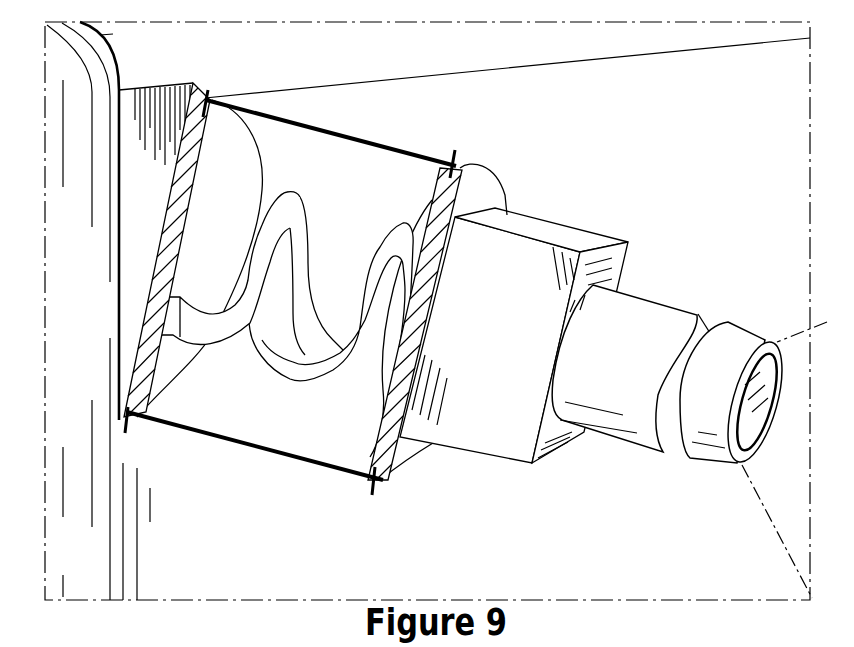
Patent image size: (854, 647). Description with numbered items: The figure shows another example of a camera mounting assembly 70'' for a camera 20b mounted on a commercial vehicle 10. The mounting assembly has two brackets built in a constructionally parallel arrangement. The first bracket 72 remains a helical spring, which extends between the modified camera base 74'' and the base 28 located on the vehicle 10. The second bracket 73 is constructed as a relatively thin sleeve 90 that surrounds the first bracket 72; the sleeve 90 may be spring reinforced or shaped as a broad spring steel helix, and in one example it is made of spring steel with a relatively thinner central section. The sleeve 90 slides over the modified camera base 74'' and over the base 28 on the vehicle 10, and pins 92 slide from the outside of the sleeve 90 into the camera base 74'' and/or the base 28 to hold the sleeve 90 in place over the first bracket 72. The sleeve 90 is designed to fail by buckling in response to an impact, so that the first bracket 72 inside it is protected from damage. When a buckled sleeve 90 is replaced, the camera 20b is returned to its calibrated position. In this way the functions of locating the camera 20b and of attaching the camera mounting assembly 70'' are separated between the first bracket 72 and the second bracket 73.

The commercial vehicle 10 is at (298, 76).
The base 28 is at (147, 138).
The pins 92 is at (207, 92).
The sleeve 90 is at (296, 127).
The second bracket 73 is at (259, 466).
The camera mounting assembly 70'' is at (308, 279).
The first bracket 72 is at (406, 206).
The camera base 74'' is at (514, 311).
The camera 20b is at (657, 263).